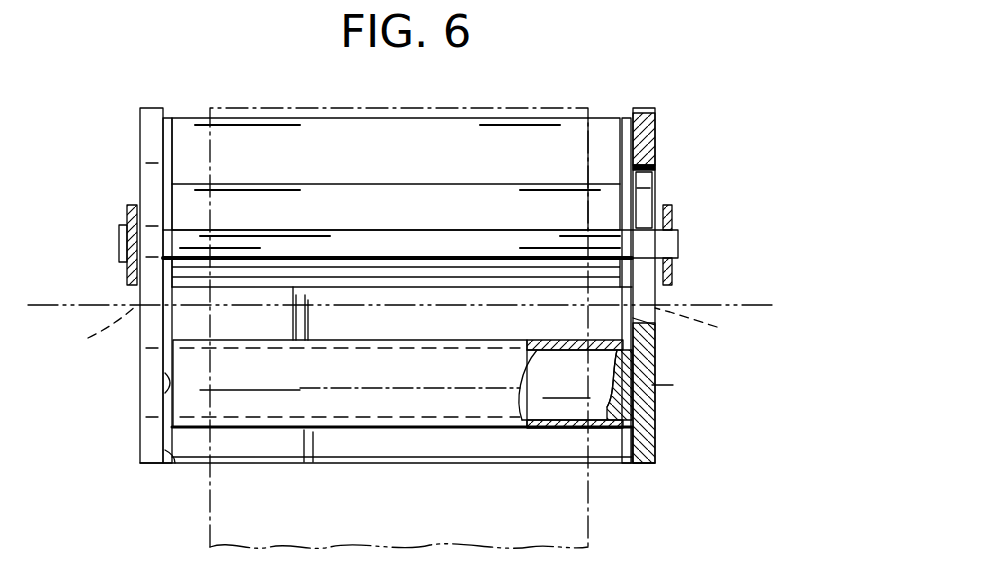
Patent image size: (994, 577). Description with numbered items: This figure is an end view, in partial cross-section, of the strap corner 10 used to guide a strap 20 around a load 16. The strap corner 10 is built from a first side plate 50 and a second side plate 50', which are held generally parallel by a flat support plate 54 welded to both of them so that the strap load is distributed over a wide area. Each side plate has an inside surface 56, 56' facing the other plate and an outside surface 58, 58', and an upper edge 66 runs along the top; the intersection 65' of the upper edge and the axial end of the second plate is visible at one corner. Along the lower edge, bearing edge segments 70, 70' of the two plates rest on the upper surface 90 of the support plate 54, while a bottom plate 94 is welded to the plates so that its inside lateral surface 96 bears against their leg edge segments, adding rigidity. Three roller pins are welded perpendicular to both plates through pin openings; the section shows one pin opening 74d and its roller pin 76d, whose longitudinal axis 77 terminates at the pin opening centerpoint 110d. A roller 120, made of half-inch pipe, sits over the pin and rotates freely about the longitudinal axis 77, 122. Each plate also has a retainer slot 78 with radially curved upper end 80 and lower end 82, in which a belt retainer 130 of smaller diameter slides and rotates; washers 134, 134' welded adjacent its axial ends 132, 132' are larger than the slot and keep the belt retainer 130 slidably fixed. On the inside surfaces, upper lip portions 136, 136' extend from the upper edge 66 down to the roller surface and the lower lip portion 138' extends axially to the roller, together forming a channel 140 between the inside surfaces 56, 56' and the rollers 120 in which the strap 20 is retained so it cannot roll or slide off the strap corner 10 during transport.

The strap corner 10 is at (652, 70).
The load 16 is at (747, 303).
The strap 20 is at (238, 108).
The first side plate 50 is at (717, 251).
The second side plate 50' is at (100, 236).
The support plate 54 is at (375, 285).
The inside surface 56 is at (632, 487).
The inside surface 56' is at (160, 498).
The outside surface 58 is at (703, 285).
The outside surface 58' is at (100, 285).
The intersection 65' is at (100, 236).
The upper edge 66 is at (630, 115).
The bearing edge segment 70 is at (706, 326).
The bearing edge segment 70' is at (91, 333).
The pin opening 74d is at (655, 370).
The roller pin 76d is at (528, 413).
The longitudinal axis 77 is at (350, 438).
The retainer slot 78 is at (658, 190).
The upper end 80 is at (652, 165).
The lower end 82 is at (660, 317).
The upper surface 90 is at (302, 290).
The bottom plate 94 is at (282, 462).
The inside lateral surface 96 is at (348, 450).
The pin opening centerpoint 110d is at (668, 387).
The roller 120 is at (258, 193).
The longitudinal axis 122 is at (395, 387).
The belt retainer 130 is at (443, 240).
The axial end 132 is at (474, 242).
The axial end 132' is at (68, 249).
The washer 134 is at (731, 238).
The washer 134' is at (87, 227).
The upper lip portion 136 is at (607, 239).
The upper lip portion 136' is at (159, 237).
The lower lip portion 138' is at (105, 413).
The channel 140 is at (598, 113).